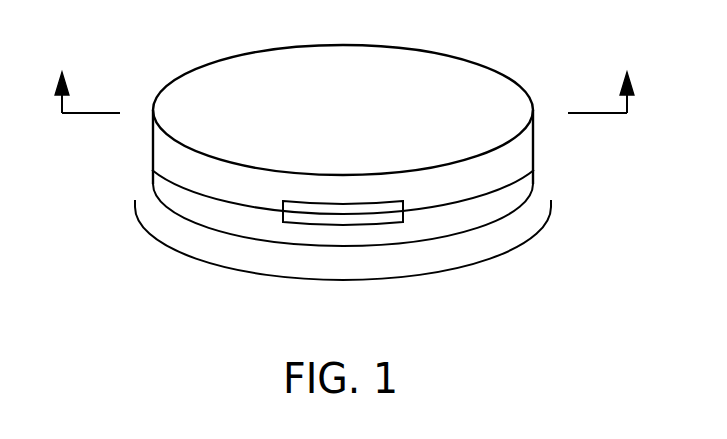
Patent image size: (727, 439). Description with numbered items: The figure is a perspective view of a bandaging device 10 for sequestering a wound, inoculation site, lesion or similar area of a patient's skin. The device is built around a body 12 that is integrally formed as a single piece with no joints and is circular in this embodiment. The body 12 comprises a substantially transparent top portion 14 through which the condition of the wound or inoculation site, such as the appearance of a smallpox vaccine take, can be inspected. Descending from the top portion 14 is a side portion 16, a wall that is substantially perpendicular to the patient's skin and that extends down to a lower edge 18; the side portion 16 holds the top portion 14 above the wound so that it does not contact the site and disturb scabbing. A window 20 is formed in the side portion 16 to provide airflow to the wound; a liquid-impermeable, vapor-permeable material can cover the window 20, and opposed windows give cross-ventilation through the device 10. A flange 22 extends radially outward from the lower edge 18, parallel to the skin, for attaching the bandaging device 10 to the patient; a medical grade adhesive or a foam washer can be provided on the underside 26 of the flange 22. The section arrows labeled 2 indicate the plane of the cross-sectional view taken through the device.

The bandaging device 10 is at (380, 166).
The body 12 is at (351, 164).
The top portion 14 is at (418, 87).
The side portion 16 is at (153, 139).
The lower edge 18 is at (430, 240).
The window 20 is at (325, 217).
The flange 22 is at (343, 250).
The underside of the flange 26 is at (216, 268).
The section line 2- 2 is at (344, 92).